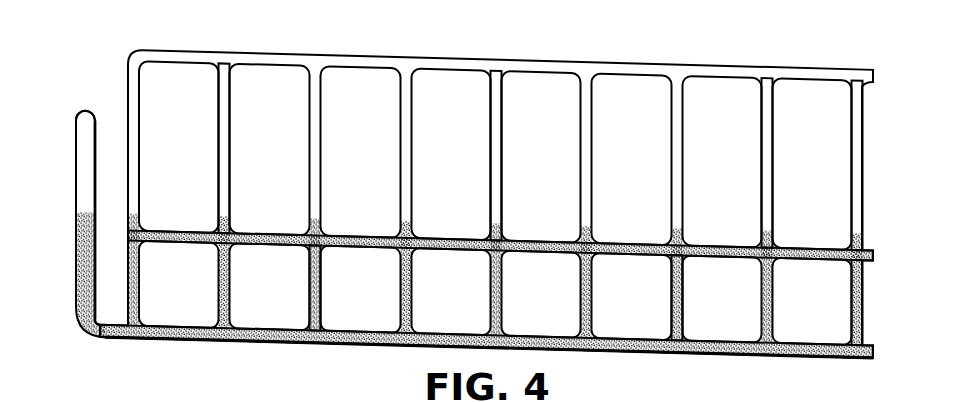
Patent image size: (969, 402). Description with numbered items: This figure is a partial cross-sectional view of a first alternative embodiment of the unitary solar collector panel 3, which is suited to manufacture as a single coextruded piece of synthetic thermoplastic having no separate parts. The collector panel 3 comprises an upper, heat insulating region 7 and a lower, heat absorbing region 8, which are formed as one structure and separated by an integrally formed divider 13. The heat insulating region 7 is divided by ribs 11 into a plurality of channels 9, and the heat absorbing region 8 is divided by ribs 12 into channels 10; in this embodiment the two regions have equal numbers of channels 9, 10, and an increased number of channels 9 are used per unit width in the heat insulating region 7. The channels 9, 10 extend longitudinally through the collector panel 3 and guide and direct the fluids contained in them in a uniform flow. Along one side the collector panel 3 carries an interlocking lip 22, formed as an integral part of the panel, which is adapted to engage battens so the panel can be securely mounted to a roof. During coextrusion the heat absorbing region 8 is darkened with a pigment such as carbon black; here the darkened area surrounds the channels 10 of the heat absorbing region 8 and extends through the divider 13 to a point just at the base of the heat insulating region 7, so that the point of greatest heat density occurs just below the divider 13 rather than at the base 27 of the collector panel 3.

The collector panel 3 is at (144, 47).
The heat insulating region 7 is at (874, 203).
The heat absorbing region 8 is at (876, 300).
The channels 9 is at (182, 78).
The channels 10 is at (183, 315).
The ribs 11 is at (229, 161).
The ribs 12 is at (306, 278).
The divider 13 is at (467, 243).
The interlocking lip 22 is at (80, 189).
The base 27 is at (420, 345).